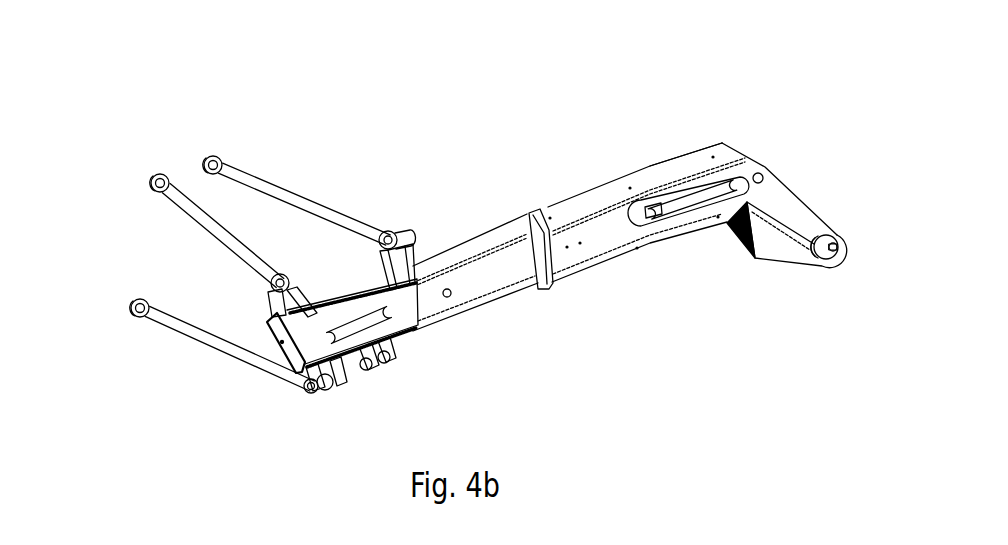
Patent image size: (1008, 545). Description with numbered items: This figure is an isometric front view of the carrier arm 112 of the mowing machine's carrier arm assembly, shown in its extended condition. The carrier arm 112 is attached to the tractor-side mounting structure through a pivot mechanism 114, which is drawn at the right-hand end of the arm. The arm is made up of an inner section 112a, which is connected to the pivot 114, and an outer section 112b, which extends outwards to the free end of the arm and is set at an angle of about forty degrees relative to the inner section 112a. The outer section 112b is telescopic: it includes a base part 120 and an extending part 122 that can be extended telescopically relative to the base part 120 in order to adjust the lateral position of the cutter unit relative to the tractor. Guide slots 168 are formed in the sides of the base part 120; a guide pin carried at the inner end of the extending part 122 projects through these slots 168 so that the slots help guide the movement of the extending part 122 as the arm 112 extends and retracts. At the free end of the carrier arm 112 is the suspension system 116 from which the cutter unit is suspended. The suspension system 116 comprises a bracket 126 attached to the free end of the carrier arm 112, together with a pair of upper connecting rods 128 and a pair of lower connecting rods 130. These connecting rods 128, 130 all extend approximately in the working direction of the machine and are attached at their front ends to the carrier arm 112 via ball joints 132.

The carrier arm 112 is at (668, 88).
The inner section 112a is at (791, 193).
The outer section 112b is at (690, 157).
The pivot mechanism 114 is at (834, 249).
The suspension system 116 is at (262, 118).
The base part 120 is at (579, 198).
The extending part 122 is at (435, 263).
The bracket 126 is at (352, 297).
The upper connecting rods 128 is at (240, 222).
The lower connecting rods 130 is at (194, 325).
The ball joints 132 is at (396, 228).
The guide slots 168 is at (677, 213).